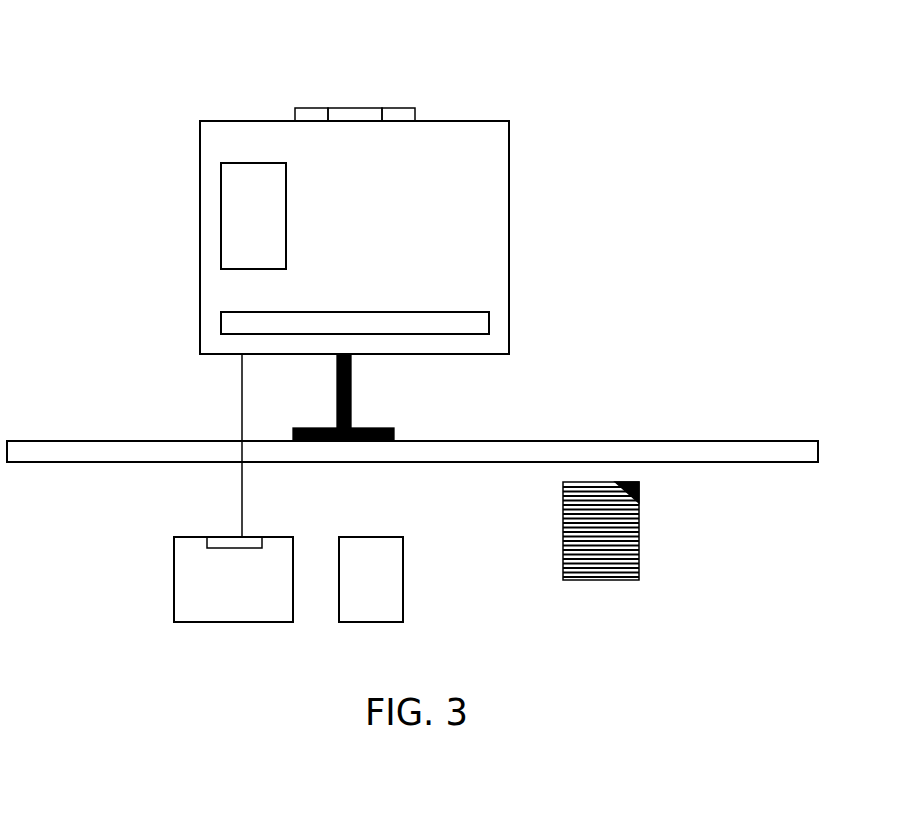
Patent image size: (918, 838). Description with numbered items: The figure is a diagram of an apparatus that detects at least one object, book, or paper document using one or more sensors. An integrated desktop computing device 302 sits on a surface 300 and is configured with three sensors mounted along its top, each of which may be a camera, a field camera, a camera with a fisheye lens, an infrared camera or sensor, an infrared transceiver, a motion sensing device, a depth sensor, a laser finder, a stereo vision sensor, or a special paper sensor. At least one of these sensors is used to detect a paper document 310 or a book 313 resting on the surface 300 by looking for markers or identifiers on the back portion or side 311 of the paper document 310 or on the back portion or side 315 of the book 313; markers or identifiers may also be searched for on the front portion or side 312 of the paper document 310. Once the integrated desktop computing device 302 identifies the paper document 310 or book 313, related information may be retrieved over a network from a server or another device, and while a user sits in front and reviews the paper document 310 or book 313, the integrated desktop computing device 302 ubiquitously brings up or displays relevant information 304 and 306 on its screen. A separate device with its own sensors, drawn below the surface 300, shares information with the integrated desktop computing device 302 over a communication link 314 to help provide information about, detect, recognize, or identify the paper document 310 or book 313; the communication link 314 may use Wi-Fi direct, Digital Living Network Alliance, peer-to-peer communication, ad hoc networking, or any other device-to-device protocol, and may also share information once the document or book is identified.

The surface 300 is at (429, 462).
The integrated desktop computing device 302 is at (200, 236).
The relevant information 304 is at (286, 215).
The relevant information 306 is at (352, 312).
The paper document 310 is at (563, 525).
The back portion or side 311 is at (639, 482).
The front portion or side 312 is at (621, 537).
The book 313 is at (369, 537).
The communication link 314 is at (242, 392).
The back portion or side 315 is at (403, 578).